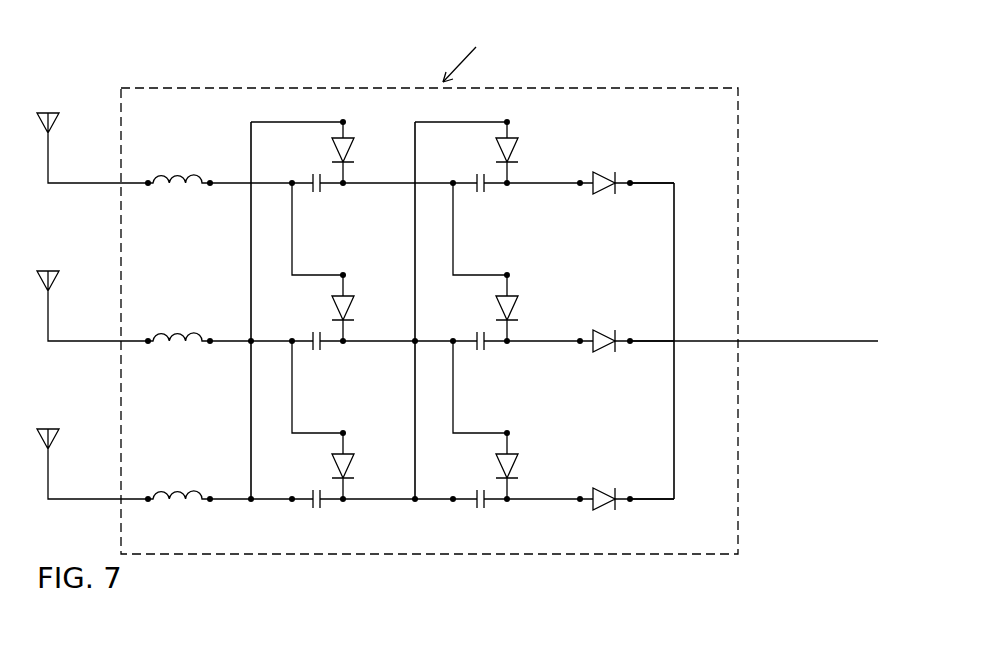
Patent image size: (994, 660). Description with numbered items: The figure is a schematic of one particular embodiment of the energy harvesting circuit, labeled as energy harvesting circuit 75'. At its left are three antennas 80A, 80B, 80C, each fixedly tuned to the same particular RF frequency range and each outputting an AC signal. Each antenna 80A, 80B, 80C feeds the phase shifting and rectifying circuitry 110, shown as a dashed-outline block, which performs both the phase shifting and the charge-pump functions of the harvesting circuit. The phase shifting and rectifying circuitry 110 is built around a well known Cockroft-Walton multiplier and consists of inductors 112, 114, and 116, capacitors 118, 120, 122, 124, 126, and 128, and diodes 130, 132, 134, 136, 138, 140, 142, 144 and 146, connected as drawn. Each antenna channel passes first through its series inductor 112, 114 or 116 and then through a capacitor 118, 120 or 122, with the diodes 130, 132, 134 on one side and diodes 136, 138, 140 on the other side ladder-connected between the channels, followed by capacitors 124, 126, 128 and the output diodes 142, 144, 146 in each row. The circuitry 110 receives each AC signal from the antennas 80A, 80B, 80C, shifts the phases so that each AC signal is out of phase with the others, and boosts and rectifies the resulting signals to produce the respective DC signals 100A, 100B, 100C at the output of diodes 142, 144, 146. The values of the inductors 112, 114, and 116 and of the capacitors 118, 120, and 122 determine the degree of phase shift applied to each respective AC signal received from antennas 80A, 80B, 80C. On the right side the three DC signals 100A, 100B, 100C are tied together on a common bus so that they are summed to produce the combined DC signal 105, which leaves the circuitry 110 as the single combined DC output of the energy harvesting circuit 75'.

The energy harvesting circuit 75' is at (474, 56).
The phase shifting and rectifying circuitry 110 is at (575, 88).
The antenna 80A is at (48, 157).
The antenna 80B is at (48, 315).
The antenna 80C is at (48, 473).
The inductor 112 is at (157, 176).
The inductor 114 is at (157, 334).
The inductor 116 is at (157, 492).
The capacitor 118 is at (321, 190).
The capacitor 120 is at (321, 348).
The capacitor 122 is at (321, 506).
The capacitor 124 is at (485, 190).
The capacitor 126 is at (485, 348).
The capacitor 128 is at (485, 506).
The diode 130 is at (353, 141).
The diode 132 is at (353, 299).
The diode 134 is at (353, 457).
The diode 136 is at (517, 141).
The diode 138 is at (517, 299).
The diode 140 is at (517, 457).
The diode 142 is at (605, 175).
The diode 144 is at (605, 333).
The diode 146 is at (605, 491).
The DC signal 100A is at (648, 183).
The DC signal 100B is at (645, 341).
The DC signal 100C is at (645, 499).
The combined DC signal 105 is at (758, 341).